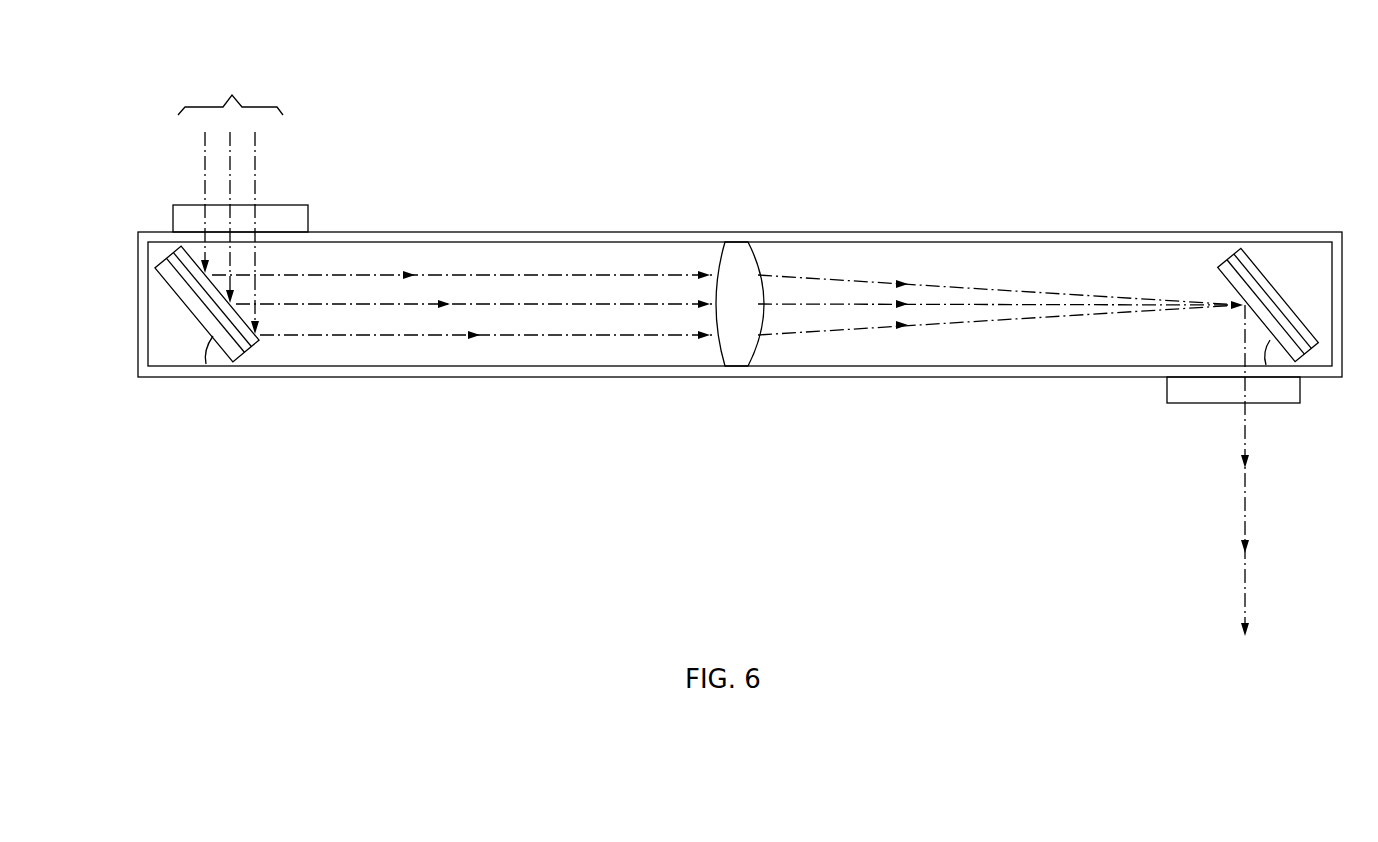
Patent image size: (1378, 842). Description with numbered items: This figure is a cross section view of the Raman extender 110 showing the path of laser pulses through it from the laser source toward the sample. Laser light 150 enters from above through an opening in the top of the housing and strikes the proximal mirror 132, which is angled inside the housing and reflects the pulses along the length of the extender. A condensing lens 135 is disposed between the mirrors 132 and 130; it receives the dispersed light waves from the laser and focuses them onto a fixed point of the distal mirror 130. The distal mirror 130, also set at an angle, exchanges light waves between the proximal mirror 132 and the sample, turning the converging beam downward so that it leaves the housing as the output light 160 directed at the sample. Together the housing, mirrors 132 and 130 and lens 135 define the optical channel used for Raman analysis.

The extender 110 is at (540, 176).
The distal mirror 130 is at (1260, 267).
The proximal mirror 132 is at (178, 297).
The condensing lens 135 is at (735, 258).
The laser beam 150 is at (282, 162).
The output beam 160 is at (1245, 600).